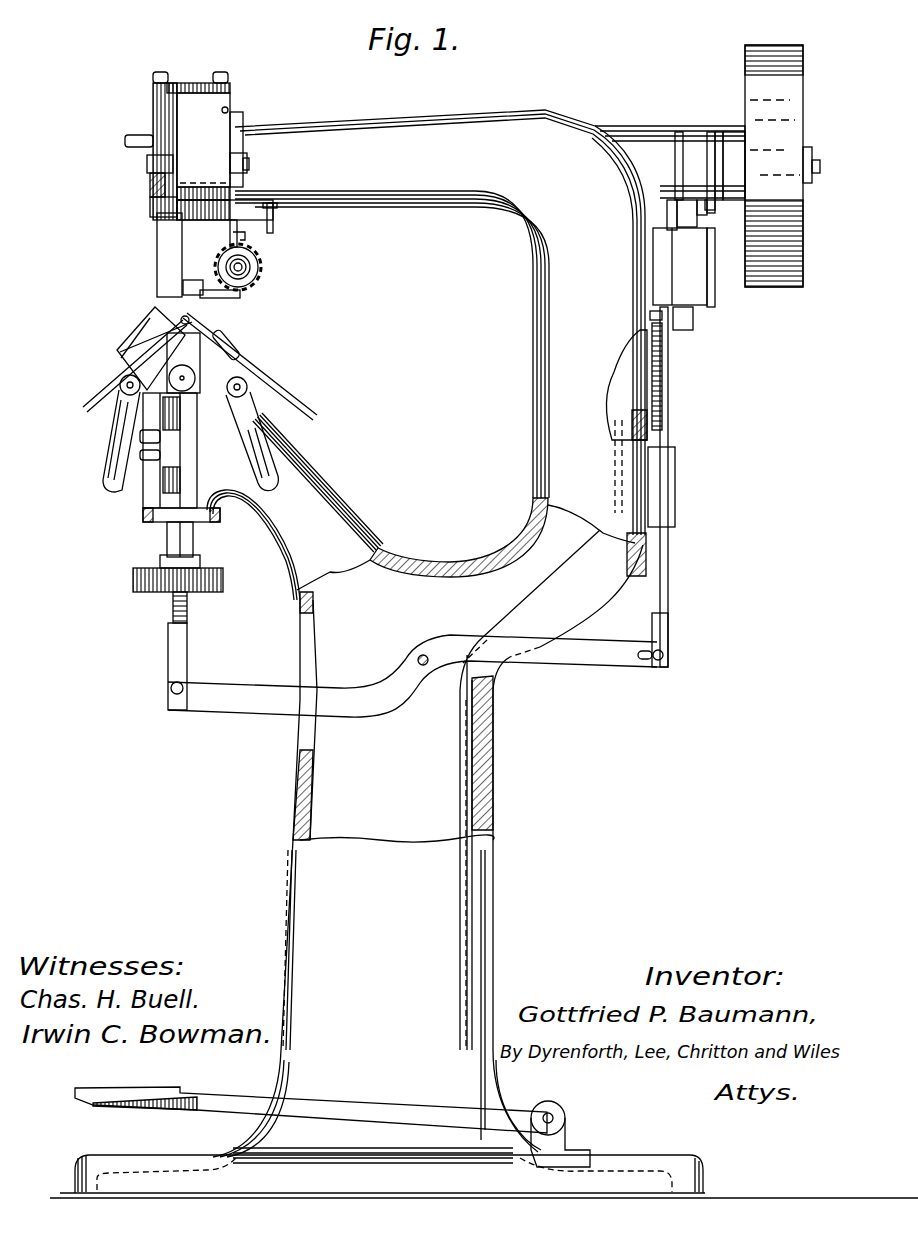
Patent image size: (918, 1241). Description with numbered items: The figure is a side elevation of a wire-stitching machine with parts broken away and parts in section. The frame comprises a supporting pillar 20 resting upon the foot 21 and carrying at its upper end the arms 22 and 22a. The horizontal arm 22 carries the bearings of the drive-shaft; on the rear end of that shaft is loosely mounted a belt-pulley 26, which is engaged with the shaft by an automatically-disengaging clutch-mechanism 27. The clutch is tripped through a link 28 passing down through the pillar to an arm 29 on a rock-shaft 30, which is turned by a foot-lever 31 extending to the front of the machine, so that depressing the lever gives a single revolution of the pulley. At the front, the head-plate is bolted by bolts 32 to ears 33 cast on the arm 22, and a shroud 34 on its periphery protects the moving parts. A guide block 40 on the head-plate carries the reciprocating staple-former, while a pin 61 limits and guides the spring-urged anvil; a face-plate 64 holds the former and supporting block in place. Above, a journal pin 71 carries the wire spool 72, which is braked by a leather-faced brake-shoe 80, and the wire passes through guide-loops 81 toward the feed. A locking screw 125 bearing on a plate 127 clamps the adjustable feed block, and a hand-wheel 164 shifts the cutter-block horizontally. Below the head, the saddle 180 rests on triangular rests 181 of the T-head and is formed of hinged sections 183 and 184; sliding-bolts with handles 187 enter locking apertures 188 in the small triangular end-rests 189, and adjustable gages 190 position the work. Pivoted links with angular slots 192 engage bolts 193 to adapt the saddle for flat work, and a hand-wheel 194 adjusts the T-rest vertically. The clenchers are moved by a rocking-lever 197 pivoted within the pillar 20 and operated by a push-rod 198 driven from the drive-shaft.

The supporting pillar 20 is at (425, 823).
The foot 21 is at (484, 1176).
The horizontal arm 22 is at (441, 350).
The arm 22a is at (345, 520).
The belt-pulley 26 is at (785, 280).
The clutch-mechanism 27 is at (722, 128).
The link 28 is at (458, 768).
The arm 29 is at (373, 1146).
The rock-shaft 30 is at (560, 1112).
The foot-lever 31 is at (192, 1098).
The bolts 32 is at (250, 165).
The ears 33 is at (240, 135).
The shroud 34 is at (225, 156).
The guide block 40 is at (211, 235).
The pin 61 is at (200, 290).
The face-plate 64 is at (157, 240).
The journal pin 71 is at (125, 141).
The wire spool 72 is at (150, 184).
The brake-shoe 80 is at (147, 165).
The guide-loops 81 is at (195, 83).
The locking screw 125 is at (275, 222).
The plate 127 is at (246, 238).
The hand-wheel 164 is at (262, 275).
The saddle 180 is at (90, 400).
The triangular rests 181 is at (150, 383).
The saddle section 183 is at (120, 360).
The saddle section 184 is at (215, 322).
The handles 187 is at (125, 345).
The locking apertures 188 is at (210, 307).
The triangular end-rests 189 is at (150, 333).
The adjustable gage 190 is at (250, 343).
The angular slot 192 is at (110, 480).
The bolt 193 is at (185, 400).
The hand-wheel 194 is at (133, 583).
The rocking-lever 197 is at (240, 705).
The push-rod 198 is at (666, 598).